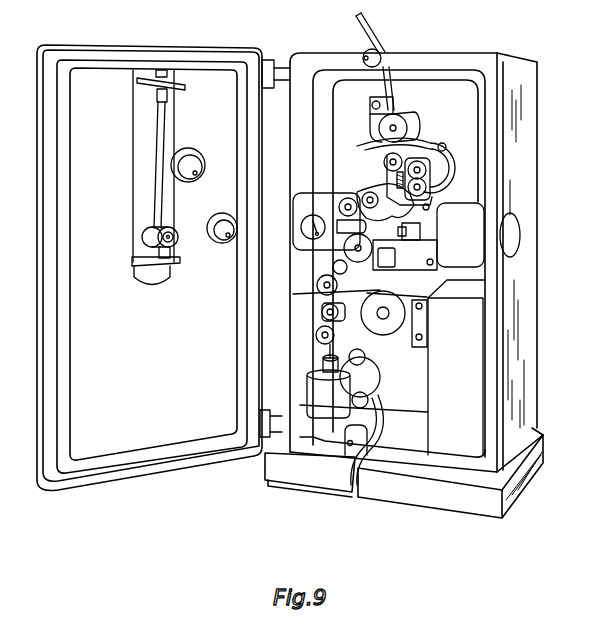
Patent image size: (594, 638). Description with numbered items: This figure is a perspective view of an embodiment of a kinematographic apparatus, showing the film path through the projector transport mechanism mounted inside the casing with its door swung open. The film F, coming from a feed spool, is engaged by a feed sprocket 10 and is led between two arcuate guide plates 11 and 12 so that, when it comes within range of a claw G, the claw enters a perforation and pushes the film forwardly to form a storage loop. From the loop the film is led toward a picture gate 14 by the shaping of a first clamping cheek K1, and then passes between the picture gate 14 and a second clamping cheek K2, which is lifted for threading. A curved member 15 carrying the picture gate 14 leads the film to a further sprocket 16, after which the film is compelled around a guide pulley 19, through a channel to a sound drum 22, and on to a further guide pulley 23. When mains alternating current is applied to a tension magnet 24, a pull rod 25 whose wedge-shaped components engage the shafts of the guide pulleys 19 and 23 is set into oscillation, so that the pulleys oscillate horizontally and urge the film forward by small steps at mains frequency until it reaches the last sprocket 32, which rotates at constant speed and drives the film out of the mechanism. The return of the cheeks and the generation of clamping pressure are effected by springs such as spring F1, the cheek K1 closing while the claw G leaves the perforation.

The film F is at (387, 43).
The feed sprocket 10 is at (400, 127).
The arcuate guide plate 11 is at (447, 155).
The arcuate guide plate 12 is at (428, 177).
The claw G is at (427, 190).
The spring F1 is at (390, 180).
The first clamping cheek K1 is at (388, 199).
The second clamping cheek K2 is at (362, 206).
The picture gate 14 is at (413, 237).
The member 15 is at (397, 247).
The sprocket 16 is at (358, 256).
The guide pulley 19 is at (325, 288).
The sound drum 22 is at (393, 327).
The guide pulley 23 is at (323, 336).
The tension magnet 24 is at (317, 397).
The pull rod 25 is at (328, 365).
The sprocket 32 is at (360, 380).